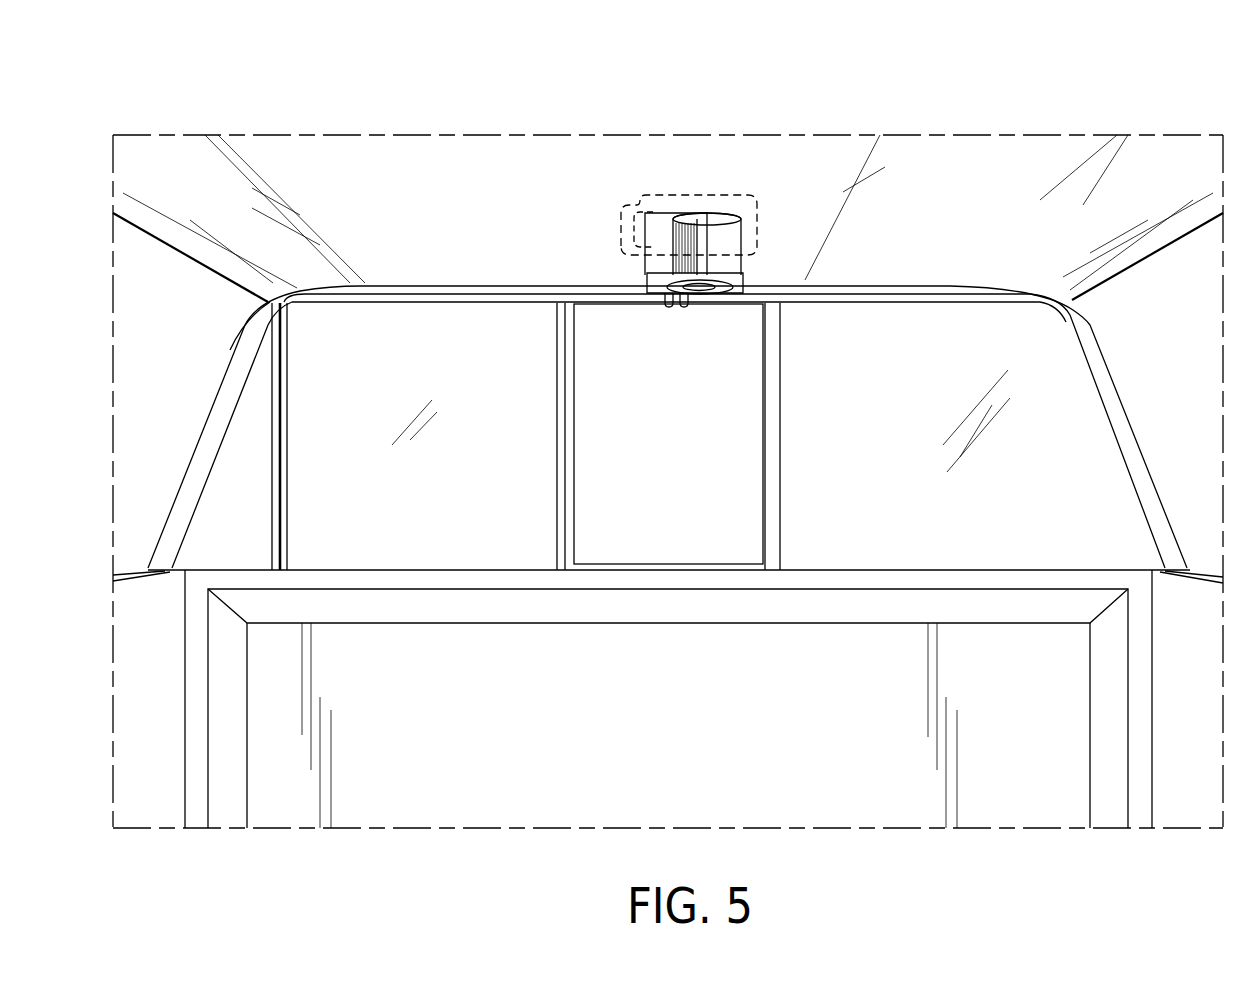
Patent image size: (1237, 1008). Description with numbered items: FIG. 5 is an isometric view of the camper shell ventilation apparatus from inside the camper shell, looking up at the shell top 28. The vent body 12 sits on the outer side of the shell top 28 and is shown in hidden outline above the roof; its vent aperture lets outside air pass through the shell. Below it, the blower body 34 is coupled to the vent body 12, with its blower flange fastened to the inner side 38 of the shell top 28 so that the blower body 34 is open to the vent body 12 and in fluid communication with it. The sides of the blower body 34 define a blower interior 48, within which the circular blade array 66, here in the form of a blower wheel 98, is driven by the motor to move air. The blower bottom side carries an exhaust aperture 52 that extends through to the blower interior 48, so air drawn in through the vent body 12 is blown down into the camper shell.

The shell top 28 is at (440, 177).
The blower wheel 98 is at (682, 267).
The vent body 12 is at (663, 232).
The blower interior 48 is at (690, 248).
The circular blade array 66 is at (692, 213).
The blower body 34 is at (727, 247).
The inner side 38 is at (898, 240).
The exhaust aperture 52 is at (728, 288).